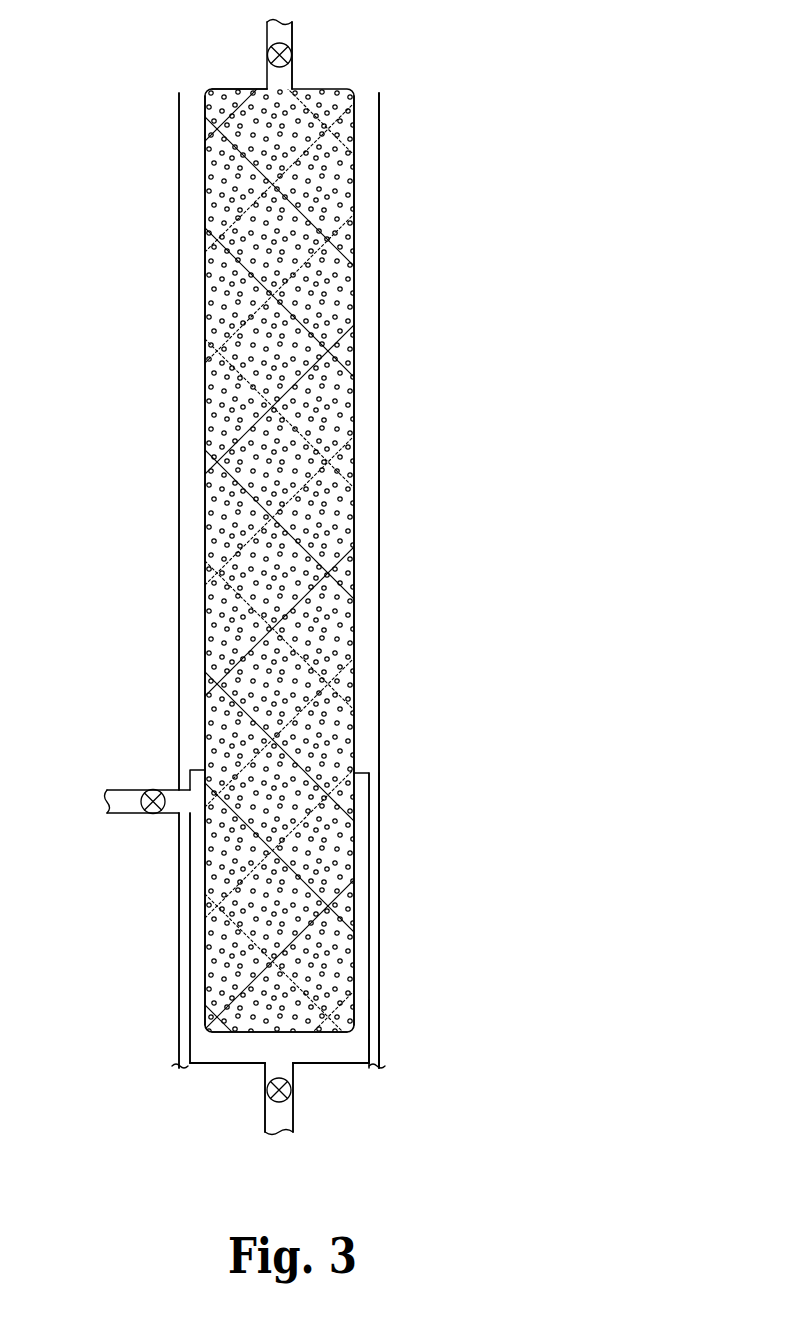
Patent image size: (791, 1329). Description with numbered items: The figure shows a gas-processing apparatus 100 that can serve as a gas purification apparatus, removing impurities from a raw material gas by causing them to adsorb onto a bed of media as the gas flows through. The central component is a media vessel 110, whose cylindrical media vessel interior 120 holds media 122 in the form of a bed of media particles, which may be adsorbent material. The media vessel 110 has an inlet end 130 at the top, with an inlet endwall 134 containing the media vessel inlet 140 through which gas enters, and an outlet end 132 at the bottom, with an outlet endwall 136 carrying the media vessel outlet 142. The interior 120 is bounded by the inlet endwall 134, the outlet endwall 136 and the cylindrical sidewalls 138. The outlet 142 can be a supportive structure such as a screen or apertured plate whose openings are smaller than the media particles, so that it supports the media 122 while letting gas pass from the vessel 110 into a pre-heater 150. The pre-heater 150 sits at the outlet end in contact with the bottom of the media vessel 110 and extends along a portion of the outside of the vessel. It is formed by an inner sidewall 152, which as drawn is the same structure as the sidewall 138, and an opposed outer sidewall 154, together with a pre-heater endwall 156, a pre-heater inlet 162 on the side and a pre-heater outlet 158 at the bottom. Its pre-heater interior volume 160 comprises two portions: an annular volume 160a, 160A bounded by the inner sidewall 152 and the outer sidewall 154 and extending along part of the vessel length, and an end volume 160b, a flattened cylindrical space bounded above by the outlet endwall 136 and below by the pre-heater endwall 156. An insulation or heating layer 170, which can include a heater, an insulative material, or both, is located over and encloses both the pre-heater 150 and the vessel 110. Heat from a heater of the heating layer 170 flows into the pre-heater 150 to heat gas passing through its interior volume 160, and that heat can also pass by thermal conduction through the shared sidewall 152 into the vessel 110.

The gas-processing apparatus 100 is at (65, 252).
The media vessel 110 is at (355, 180).
The media vessel interior 120 is at (263, 366).
The media 122 is at (300, 512).
The inlet end 130 is at (370, 47).
The outlet end 132 is at (373, 1113).
The inlet endwall 134 is at (240, 86).
The outlet endwall 136 is at (267, 1023).
The sidewalls 138 is at (355, 343).
The media vessel inlet 140 is at (295, 85).
The media vessel outlet 142 is at (340, 1040).
The pre-heater 150 is at (363, 1035).
The inner sidewall 152 is at (355, 810).
The outer sidewall 154 is at (372, 828).
The pre-heater endwall 156 is at (315, 1068).
The pre-heater outlet 158 is at (263, 1068).
The pre-heater interior volume 160 is at (243, 1048).
The annular volume 160a is at (193, 947).
The annular volume 160A is at (362, 957).
The end volume 160b is at (212, 1059).
The pre-heater inlet 162 is at (168, 785).
The insulation or heating layer 170 is at (368, 396).